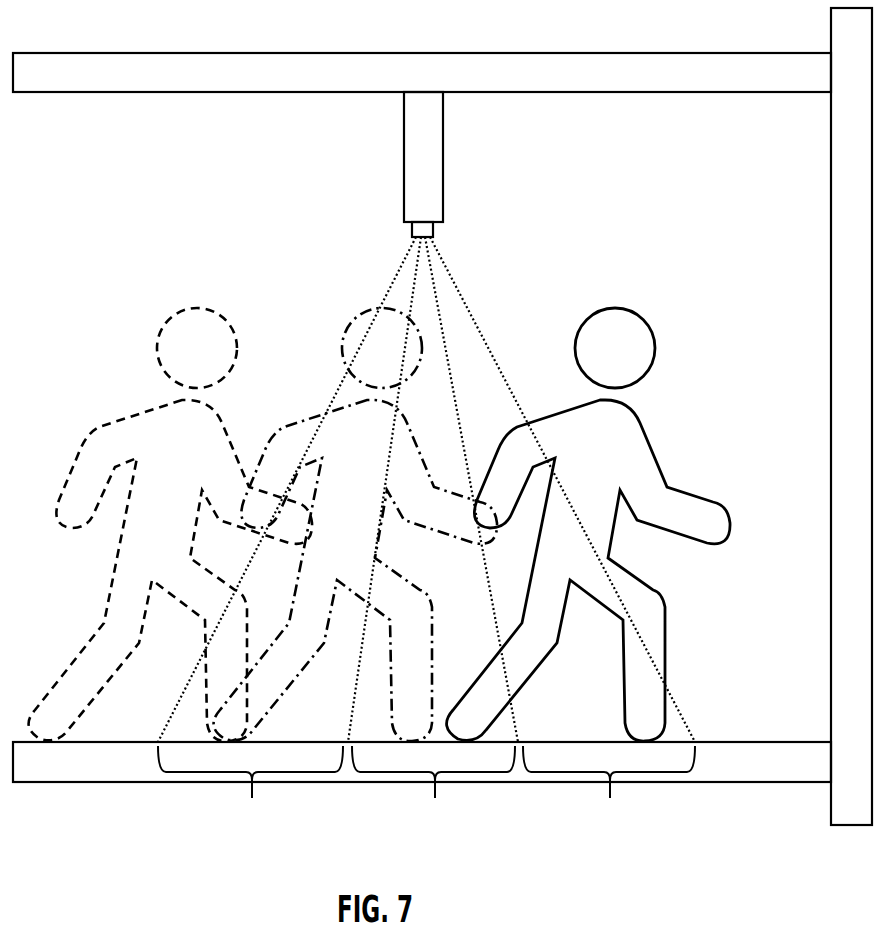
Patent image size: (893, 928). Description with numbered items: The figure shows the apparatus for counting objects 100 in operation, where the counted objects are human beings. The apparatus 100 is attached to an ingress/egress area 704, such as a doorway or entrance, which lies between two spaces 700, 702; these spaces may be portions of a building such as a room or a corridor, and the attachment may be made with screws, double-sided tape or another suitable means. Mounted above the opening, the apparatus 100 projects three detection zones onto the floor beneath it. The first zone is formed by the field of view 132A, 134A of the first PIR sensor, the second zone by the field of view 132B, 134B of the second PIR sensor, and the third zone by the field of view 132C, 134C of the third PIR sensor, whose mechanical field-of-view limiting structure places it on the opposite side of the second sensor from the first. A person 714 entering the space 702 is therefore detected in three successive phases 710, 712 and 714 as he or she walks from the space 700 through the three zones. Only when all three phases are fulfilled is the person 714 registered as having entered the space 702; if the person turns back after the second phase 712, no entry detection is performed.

The apparatus for counting objects 100 is at (412, 230).
The space 700 is at (200, 168).
The space 702 is at (615, 175).
The ingress/egress area 704 is at (423, 108).
The first phase 710 is at (159, 340).
The second phase 712 is at (344, 340).
The person 714 is at (575, 342).
The field of view of first PIR sensor 132A is at (289, 530).
The field of view of first PIR sensor 134A is at (289, 530).
The field of view of second PIR sensor 132B is at (435, 530).
The field of view of second PIR sensor 134B is at (435, 530).
The field of view of third PIR sensor 132C is at (562, 530).
The field of view of third PIR sensor 134C is at (562, 530).